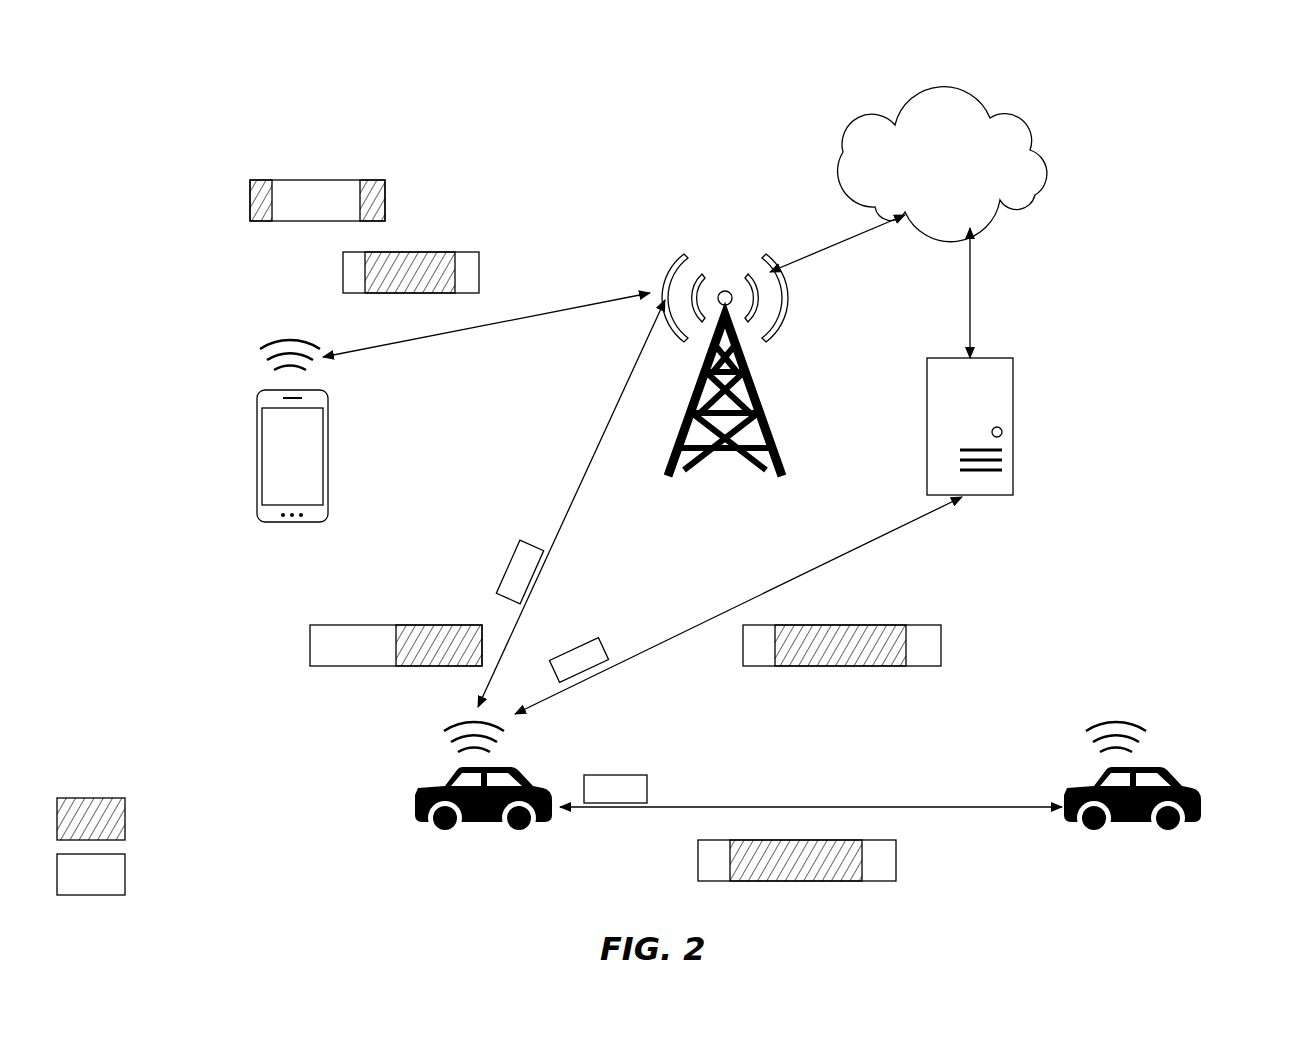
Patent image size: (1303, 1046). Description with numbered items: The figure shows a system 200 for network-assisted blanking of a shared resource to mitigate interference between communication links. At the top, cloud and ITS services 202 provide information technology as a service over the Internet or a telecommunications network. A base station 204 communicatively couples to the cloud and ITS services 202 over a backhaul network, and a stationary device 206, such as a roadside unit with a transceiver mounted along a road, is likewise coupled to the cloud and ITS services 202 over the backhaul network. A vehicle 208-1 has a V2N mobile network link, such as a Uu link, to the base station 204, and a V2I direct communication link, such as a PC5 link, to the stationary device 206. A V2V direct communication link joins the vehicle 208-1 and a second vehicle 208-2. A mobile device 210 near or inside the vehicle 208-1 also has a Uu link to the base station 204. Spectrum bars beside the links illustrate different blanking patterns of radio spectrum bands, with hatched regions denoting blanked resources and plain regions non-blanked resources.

The system 200 is at (1224, 99).
The cloud and ITS services 202 is at (1050, 168).
The base station 204 is at (668, 476).
The stationary device 206 is at (927, 432).
The vehicle 208-1 is at (420, 815).
The vehicle 208-2 is at (1068, 810).
The mobile device 210 is at (328, 435).